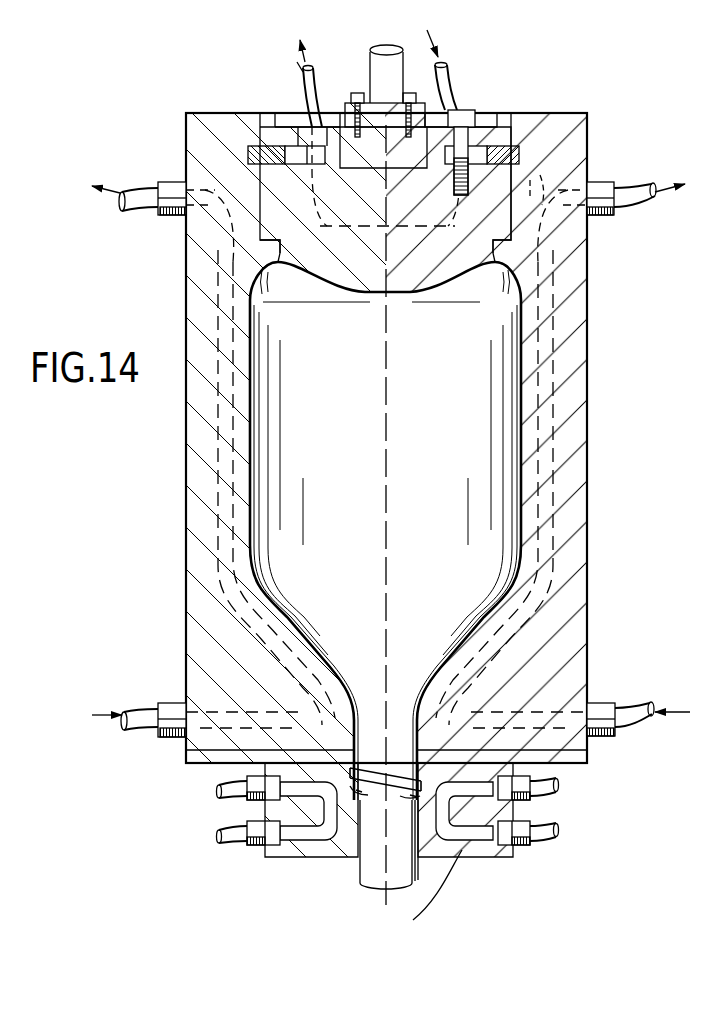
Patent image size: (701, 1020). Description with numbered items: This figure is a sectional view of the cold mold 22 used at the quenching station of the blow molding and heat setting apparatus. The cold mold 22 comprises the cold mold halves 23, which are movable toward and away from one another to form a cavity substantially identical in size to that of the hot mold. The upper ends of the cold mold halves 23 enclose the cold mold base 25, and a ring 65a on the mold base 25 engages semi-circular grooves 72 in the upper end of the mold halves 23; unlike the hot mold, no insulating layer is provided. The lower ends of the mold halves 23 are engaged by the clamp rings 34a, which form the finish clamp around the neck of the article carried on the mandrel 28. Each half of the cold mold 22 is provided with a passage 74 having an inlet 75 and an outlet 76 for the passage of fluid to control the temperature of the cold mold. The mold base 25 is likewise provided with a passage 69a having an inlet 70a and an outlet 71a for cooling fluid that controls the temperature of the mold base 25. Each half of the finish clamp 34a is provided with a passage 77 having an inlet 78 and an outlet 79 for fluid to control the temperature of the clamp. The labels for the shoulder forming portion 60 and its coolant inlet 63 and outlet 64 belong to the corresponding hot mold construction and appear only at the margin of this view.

The cold mold 22 is at (183, 100).
The cold mold halves 23 is at (195, 508).
The cold mold base 25 is at (492, 102).
The mandrel 28 is at (387, 872).
The clamp rings 34a is at (347, 800).
The shoulder forming portion 60 is at (1, 781).
The inlet 63 is at (0, 727).
The outlet 64 is at (0, 696).
The ring 65a is at (515, 168).
The passage 69a is at (412, 303).
The inlet 70a is at (455, 70).
The outlet 71a is at (302, 73).
The semi-circular grooves 72 is at (546, 188).
The passage 74 is at (225, 472).
The inlet 75 is at (160, 703).
The outlet 76 is at (158, 184).
The passage 77 is at (297, 835).
The inlet 78 is at (215, 832).
The outlet 79 is at (215, 787).